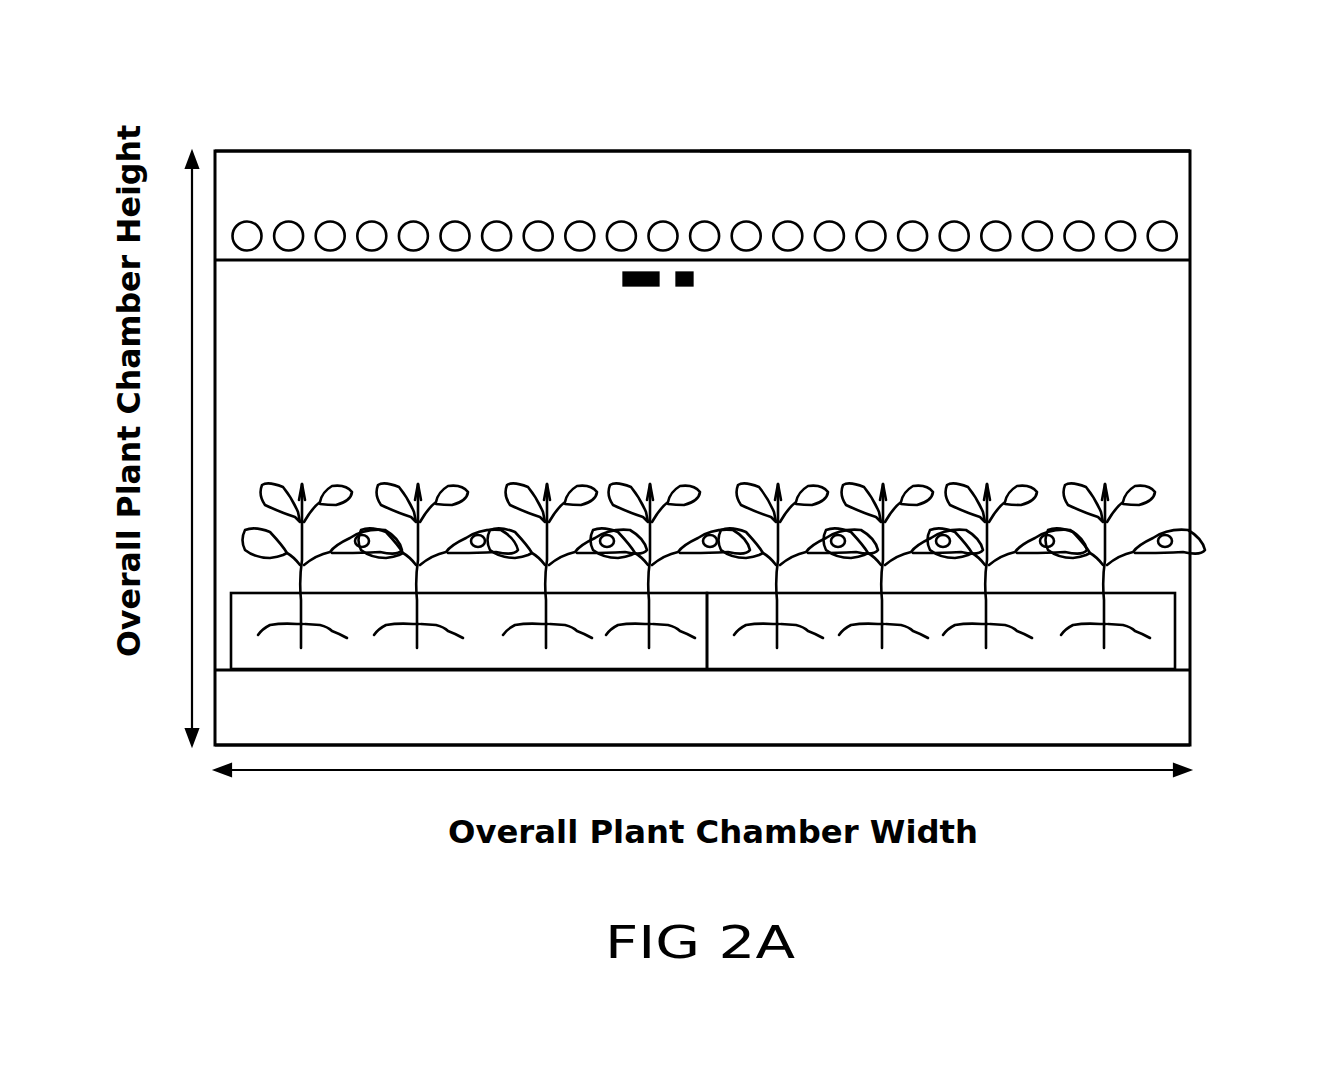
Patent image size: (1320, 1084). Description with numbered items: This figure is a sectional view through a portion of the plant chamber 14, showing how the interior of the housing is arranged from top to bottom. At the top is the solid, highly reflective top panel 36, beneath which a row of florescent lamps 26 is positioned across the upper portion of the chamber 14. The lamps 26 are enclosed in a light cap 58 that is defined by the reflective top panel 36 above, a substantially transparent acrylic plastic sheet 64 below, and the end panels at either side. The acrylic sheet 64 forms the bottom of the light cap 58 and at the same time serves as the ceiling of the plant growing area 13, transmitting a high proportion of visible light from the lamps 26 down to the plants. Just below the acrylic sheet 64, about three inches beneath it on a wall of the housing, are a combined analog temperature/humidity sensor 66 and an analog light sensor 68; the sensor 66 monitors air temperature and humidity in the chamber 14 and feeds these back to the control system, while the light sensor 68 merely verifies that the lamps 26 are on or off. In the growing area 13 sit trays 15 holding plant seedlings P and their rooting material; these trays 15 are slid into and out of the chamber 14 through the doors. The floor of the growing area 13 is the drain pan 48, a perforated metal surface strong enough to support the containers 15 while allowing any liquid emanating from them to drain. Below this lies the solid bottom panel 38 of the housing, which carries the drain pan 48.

The growing area 13 is at (930, 436).
The plant chamber 14 is at (1195, 375).
The trays 15 is at (1173, 597).
The florescent lamps 26 is at (710, 223).
The top panel 36 is at (950, 150).
The bottom panel 38 is at (915, 745).
The drain pan 48 is at (733, 672).
The light cap 58 is at (692, 150).
The acrylic plastic sheet 64 is at (845, 262).
The temperature/humidity sensor 66 is at (652, 290).
The light sensor 68 is at (693, 288).
The plant seedlings P is at (455, 486).